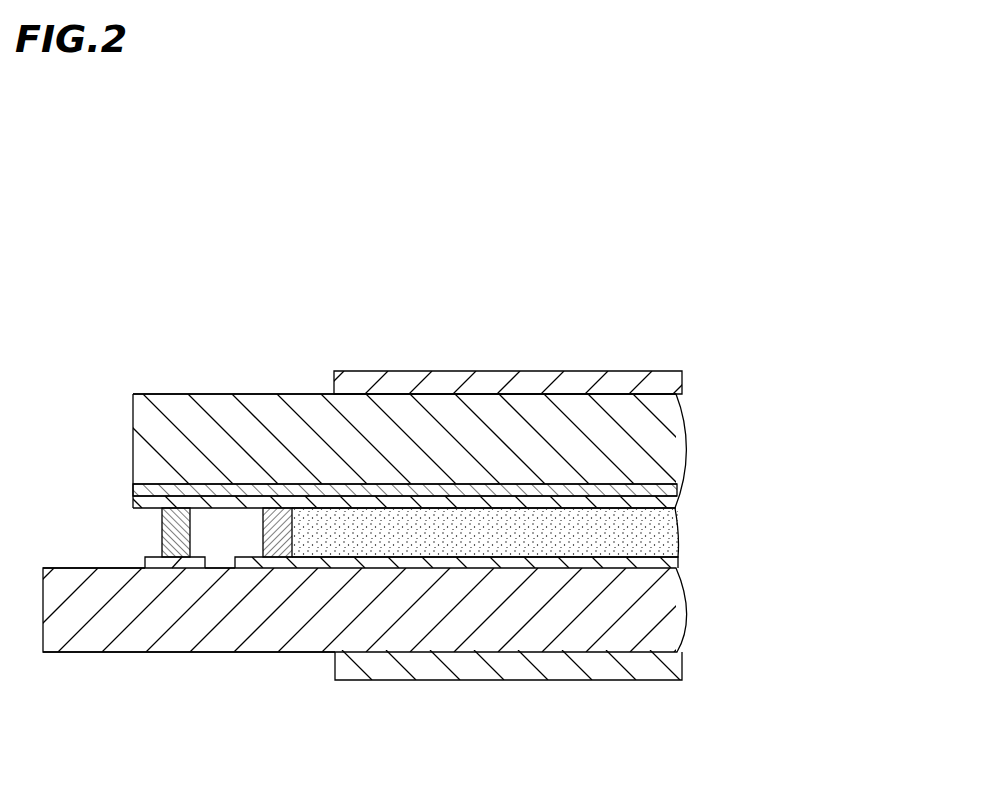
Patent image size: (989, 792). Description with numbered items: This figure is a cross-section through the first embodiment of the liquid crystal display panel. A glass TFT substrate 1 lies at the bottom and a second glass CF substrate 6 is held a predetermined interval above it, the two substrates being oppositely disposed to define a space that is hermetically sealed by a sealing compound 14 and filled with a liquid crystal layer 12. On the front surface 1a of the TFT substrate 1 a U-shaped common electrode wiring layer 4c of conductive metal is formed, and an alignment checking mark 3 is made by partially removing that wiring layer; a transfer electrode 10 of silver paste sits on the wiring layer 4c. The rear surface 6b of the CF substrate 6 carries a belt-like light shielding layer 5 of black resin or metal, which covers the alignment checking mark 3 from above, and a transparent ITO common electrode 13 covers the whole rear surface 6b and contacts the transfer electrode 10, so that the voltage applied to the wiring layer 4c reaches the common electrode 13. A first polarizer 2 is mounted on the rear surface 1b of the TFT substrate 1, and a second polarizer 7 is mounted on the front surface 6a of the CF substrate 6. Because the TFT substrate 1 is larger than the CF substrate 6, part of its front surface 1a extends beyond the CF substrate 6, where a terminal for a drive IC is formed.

The glass substrate (TFT substrate) 1 is at (668, 627).
The front surface of the TFT substrate 1a is at (67, 568).
The rear surface of the TFT substrate 1b is at (75, 652).
The first polarizer 2 is at (593, 668).
The alignment checking mark 3 is at (222, 560).
The U-shaped common electrode wiring layer 4c is at (168, 558).
The light shielding layer 5 is at (675, 487).
The glass substrate (CF substrate) 6 is at (660, 424).
The front surface of the CF substrate 6a is at (153, 403).
The rear surface of the CF substrate 6b is at (153, 483).
The second polarizer 7 is at (567, 380).
The transfer electrode 10 is at (163, 540).
The liquid crystal layer 12 is at (665, 529).
The common electrode 13 is at (660, 503).
The sealing compound 14 is at (274, 545).